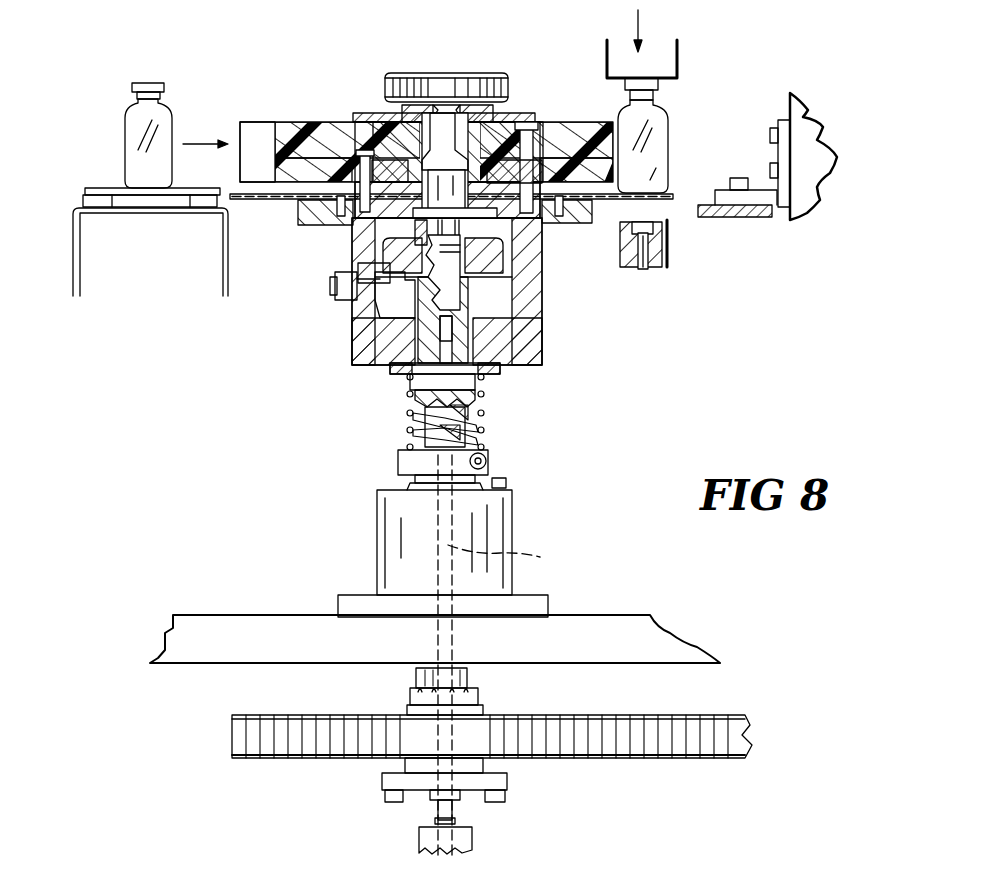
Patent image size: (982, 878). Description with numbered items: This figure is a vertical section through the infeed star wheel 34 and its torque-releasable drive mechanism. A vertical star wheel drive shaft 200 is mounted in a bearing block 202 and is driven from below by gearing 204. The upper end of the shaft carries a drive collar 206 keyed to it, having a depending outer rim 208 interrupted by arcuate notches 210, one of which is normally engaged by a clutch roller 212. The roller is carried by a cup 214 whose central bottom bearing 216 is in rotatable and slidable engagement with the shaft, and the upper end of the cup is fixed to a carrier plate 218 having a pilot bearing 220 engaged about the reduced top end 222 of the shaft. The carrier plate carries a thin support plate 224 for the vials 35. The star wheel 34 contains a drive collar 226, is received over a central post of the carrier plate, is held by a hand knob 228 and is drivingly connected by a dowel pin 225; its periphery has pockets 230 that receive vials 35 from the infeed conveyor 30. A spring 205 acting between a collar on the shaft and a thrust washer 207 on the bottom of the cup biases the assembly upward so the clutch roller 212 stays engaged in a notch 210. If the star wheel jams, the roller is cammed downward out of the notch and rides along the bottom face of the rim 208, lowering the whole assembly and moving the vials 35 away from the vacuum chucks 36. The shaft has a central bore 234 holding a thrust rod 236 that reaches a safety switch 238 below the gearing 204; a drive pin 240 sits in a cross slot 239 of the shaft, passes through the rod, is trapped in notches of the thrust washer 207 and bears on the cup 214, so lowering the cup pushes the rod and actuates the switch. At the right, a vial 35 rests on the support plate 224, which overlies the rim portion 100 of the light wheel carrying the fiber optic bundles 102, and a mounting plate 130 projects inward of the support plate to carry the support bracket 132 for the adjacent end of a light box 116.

The infeed conveyor 30 is at (168, 200).
The infeed star wheel 34 is at (300, 130).
The vial 35 is at (133, 150).
The vacuum chuck 36 is at (655, 82).
The rim portion of the light wheel 100 is at (668, 233).
The fiber optic bundles 102 is at (647, 258).
The light box 116 is at (803, 123).
The mounting plate 130 is at (753, 213).
The support bracket 132 is at (780, 157).
The star wheel drive shaft 200 is at (410, 447).
The bearing block 202 is at (508, 518).
The gearing 204 is at (585, 755).
The spring 205 is at (481, 430).
The drive collar 206 is at (505, 258).
The thrust washer 207 is at (415, 373).
The depending outer rim 208 is at (505, 292).
The arcuate notch 210 is at (335, 280).
The clutch roller 212 is at (395, 297).
The cup 214 is at (542, 262).
The central bottom bearing 216 is at (505, 348).
The carrier plate 218 is at (318, 250).
The pilot bearing 220 is at (410, 205).
The reduced top end of the shaft 222 is at (453, 180).
The support plate 224 is at (272, 202).
The dowel pin 225 is at (395, 170).
The drive collar of the star wheel 226 is at (393, 170).
The hand knob 228 is at (415, 92).
The pocket 230 is at (255, 126).
The central bore 234 is at (509, 656).
The thrust rod 236 is at (455, 348).
The safety switch 238 is at (470, 845).
The cross slot 239 is at (425, 387).
The drive pin 240 is at (480, 355).